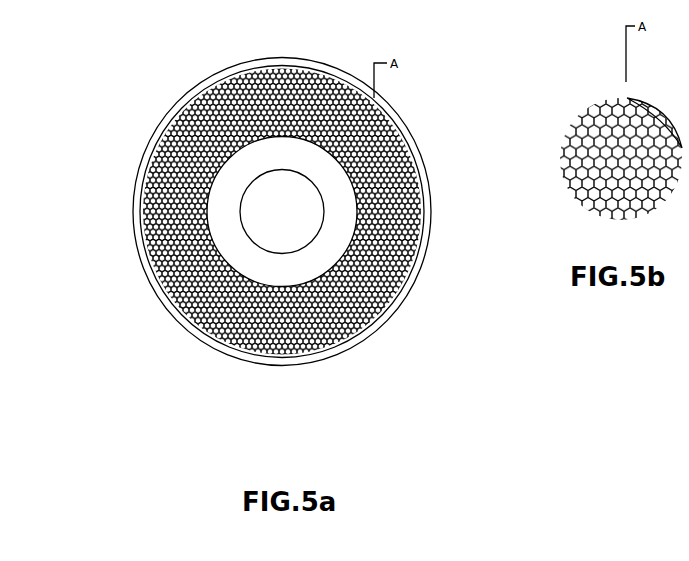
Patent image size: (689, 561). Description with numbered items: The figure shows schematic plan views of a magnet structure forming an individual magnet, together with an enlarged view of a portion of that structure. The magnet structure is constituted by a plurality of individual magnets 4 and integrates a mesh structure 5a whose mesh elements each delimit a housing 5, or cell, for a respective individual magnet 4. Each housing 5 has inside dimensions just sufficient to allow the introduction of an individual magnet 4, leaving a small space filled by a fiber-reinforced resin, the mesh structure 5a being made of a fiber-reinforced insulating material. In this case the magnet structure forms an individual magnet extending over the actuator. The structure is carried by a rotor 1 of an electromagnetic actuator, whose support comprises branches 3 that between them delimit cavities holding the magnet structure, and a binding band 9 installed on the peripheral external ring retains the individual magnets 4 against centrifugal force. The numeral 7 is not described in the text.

In FIG. 5a, the rotor 1 is at (365, 352).
In FIG. 5a, the branch 3 is at (222, 163).
In FIG. 5a, the individual magnet 4 is at (210, 339).
In FIG. 5b, the individual magnet 4 is at (601, 202).
In FIG. 5a, the housing 5 is at (317, 72).
In FIG. 5b, the housing 5 is at (570, 106).
In FIG. 5a, the mesh structure 5a is at (336, 95).
In FIG. 5b, the mesh structure 5a is at (605, 118).
In FIG. 5a, the inner tube 7 is at (291, 213).
In FIG. 5a, the binding band 9 is at (138, 221).